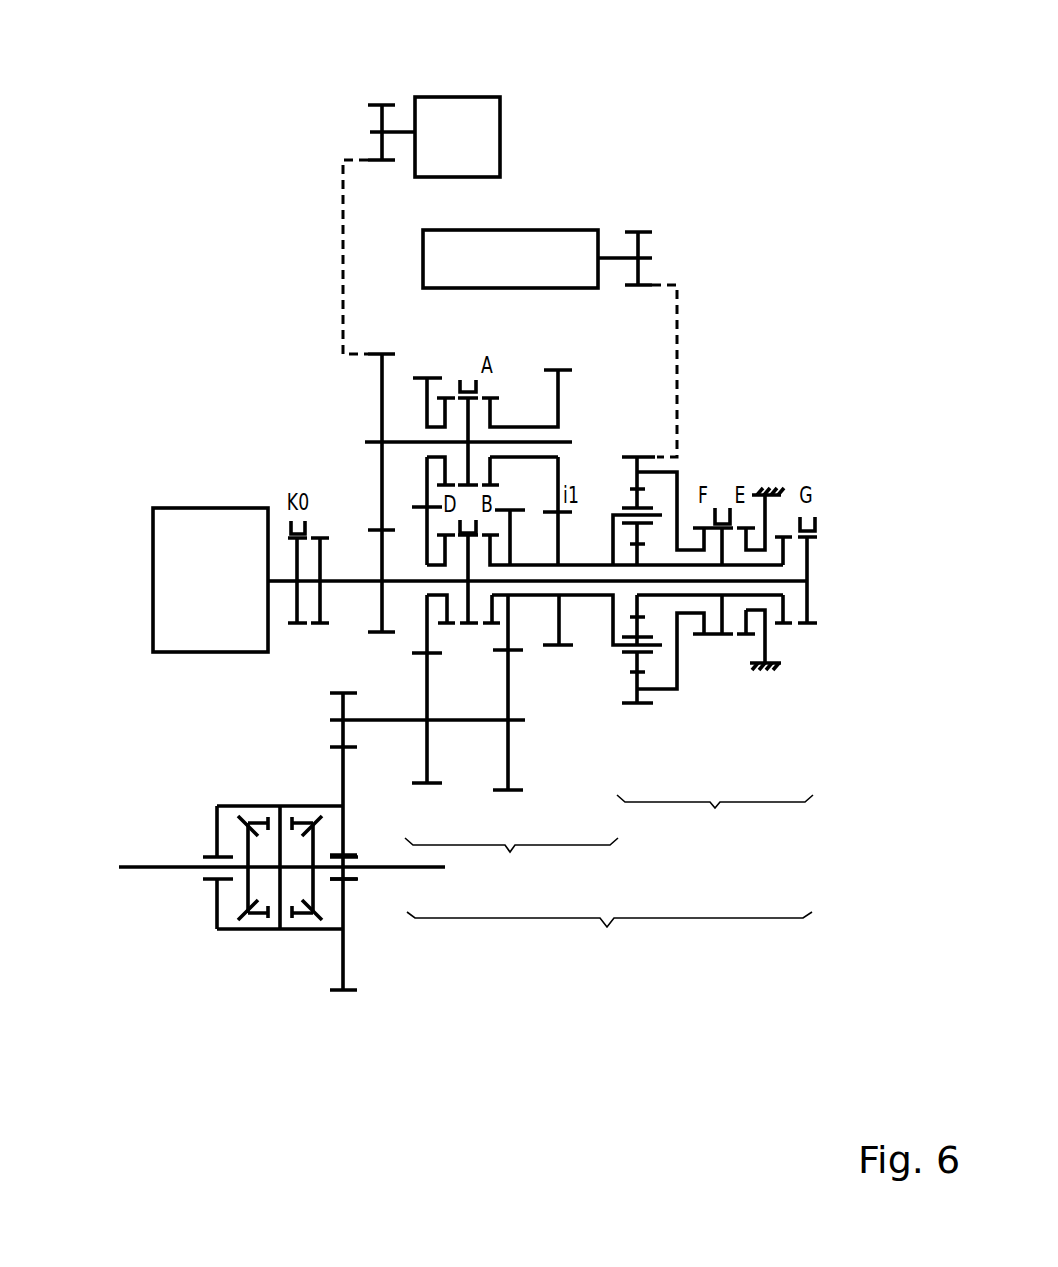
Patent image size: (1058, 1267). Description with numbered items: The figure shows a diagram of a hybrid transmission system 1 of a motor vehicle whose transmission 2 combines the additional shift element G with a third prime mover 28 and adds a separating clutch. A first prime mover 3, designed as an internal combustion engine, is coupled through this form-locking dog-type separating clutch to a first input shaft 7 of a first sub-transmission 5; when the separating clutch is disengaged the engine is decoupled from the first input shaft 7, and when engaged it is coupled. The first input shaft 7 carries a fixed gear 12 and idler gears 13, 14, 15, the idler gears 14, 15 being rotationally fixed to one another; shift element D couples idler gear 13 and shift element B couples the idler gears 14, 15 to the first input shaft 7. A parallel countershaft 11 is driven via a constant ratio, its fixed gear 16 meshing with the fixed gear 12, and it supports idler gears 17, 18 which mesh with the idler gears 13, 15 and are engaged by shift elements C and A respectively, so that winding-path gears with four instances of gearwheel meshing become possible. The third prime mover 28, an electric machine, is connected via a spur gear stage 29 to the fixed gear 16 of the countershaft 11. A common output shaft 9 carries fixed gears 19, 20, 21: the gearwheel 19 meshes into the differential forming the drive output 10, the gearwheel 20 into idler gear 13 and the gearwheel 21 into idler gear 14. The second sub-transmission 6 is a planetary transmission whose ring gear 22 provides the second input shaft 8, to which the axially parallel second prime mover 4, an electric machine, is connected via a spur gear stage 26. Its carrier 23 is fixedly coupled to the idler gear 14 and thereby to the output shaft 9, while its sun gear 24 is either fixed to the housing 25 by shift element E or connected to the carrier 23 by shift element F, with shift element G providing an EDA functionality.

The transmission system 1 is at (738, 128).
The transmission 2 is at (609, 942).
The first prime mover 3 is at (198, 605).
The second prime mover 4 is at (467, 257).
The first sub-transmission 5 is at (511, 869).
The second sub-transmission 6 is at (715, 826).
The first input shaft 7 is at (367, 577).
The second input shaft 8 is at (779, 482).
The output shaft 9 is at (415, 720).
The drive output 10 is at (290, 975).
The countershaft 11 is at (377, 442).
The fixed gear 12 is at (383, 605).
The idler gear 13 is at (423, 533).
The idler gear 14 is at (512, 535).
The idler gear 15 is at (557, 600).
The fixed gear 16 is at (380, 385).
The idler gear 17 is at (425, 412).
The idler gear 18 is at (560, 398).
The gearwheel 19 is at (343, 735).
The gearwheel 20 is at (428, 735).
The gearwheel 21 is at (512, 730).
The ring gear 22 is at (638, 465).
The carrier 23 is at (655, 513).
The sun gear 24 is at (637, 603).
The housing 25 is at (780, 666).
The spur gear stage 26 is at (677, 422).
The third prime mover 28 is at (438, 130).
The spur gear stage 29 is at (340, 285).